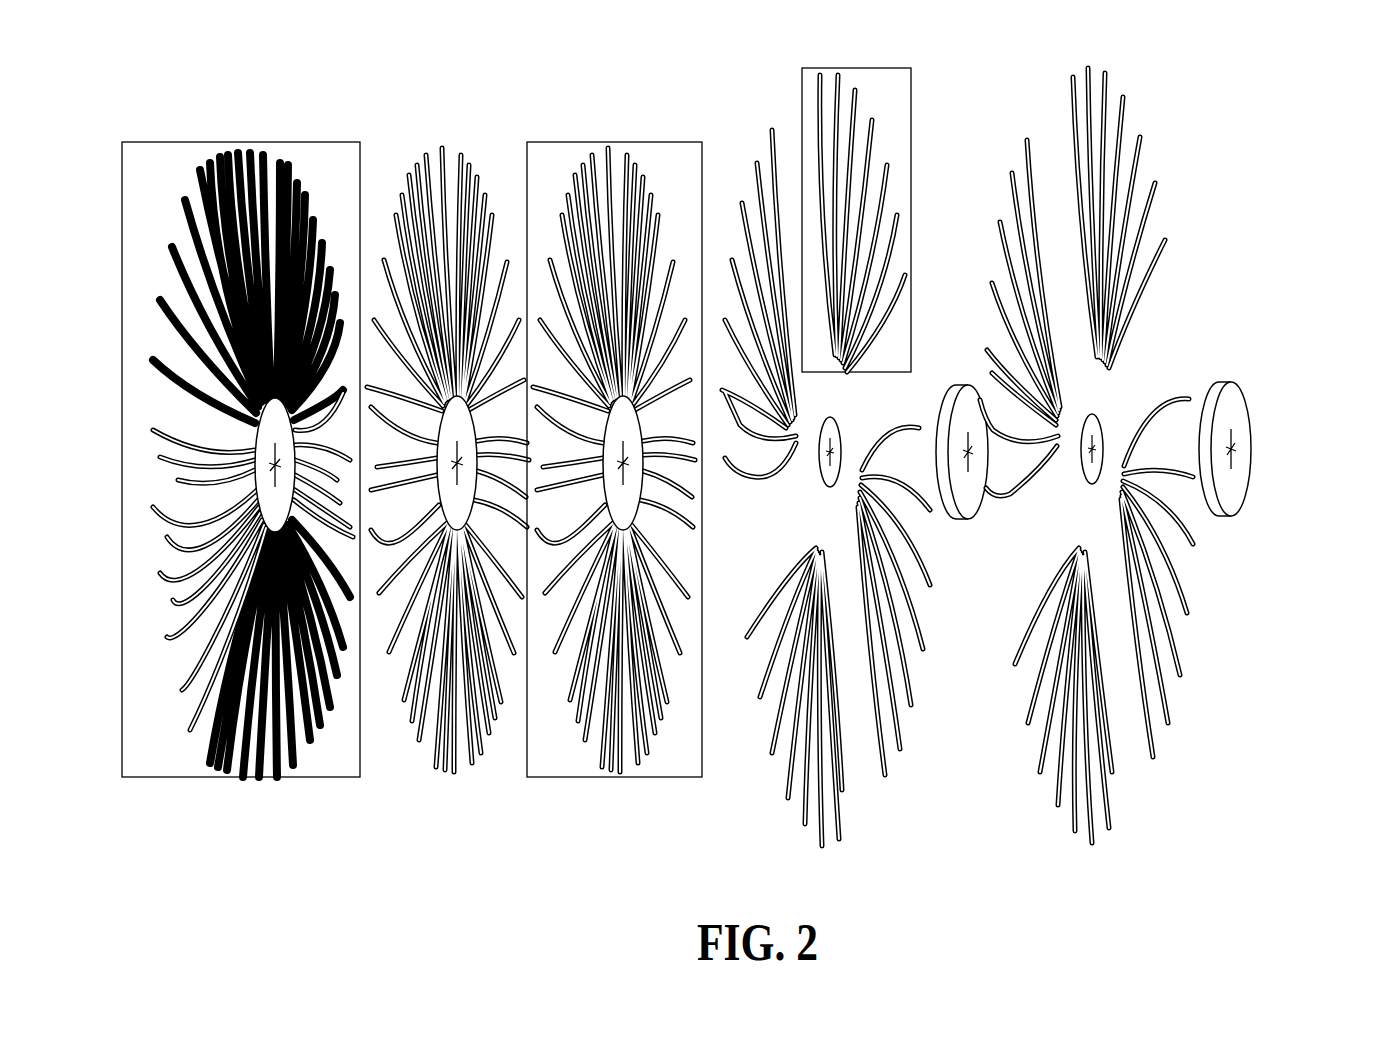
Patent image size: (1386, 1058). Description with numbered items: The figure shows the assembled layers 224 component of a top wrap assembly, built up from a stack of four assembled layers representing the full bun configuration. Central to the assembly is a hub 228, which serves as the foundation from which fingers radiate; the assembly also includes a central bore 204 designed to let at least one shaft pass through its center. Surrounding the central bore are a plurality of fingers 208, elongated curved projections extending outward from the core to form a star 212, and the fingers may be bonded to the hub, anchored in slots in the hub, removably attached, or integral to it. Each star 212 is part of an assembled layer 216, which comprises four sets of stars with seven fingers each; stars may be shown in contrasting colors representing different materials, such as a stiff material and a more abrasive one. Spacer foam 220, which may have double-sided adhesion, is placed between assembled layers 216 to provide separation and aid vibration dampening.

The central bore 204 is at (1118, 420).
The fingers 208 is at (1140, 137).
The star 212 is at (913, 95).
The assembled layer 216 is at (617, 141).
The spacer foam 220 is at (1236, 427).
The assembled layers 224 is at (243, 141).
The hub 228 is at (1090, 412).